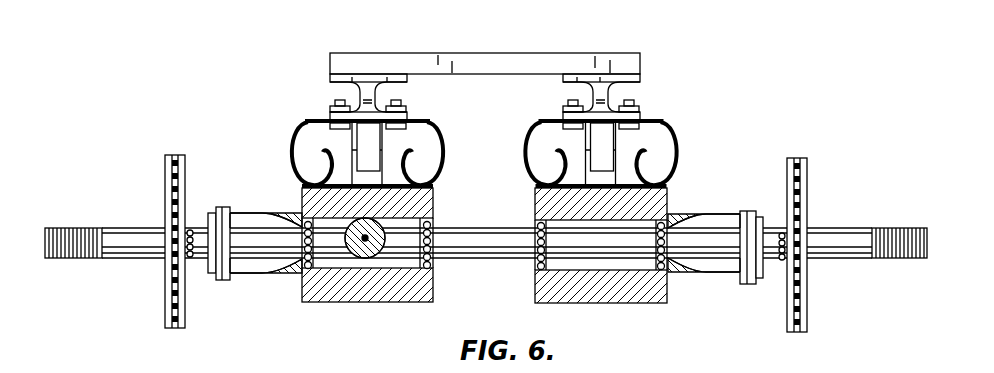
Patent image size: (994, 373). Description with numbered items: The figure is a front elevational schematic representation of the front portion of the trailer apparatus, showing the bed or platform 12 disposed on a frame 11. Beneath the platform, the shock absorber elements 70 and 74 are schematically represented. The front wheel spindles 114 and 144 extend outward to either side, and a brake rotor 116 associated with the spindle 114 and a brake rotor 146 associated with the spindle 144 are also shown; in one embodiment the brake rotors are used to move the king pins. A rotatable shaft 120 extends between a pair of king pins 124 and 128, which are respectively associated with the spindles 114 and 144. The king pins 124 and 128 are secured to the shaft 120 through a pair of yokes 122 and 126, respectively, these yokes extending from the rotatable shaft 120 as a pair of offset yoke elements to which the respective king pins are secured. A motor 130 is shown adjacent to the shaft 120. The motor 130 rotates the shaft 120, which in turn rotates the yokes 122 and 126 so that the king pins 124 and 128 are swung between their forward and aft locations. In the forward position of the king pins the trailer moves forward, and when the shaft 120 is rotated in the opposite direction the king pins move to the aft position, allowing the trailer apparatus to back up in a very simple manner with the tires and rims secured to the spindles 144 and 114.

The bed or platform 12 is at (493, 53).
The frame 11 is at (609, 95).
The shock absorber element 74 is at (303, 121).
The shock absorber element 70 is at (677, 145).
The brake rotor 146 is at (164, 178).
The front wheel spindle 144 is at (128, 228).
The king pin 128 is at (222, 207).
The yoke 126 is at (250, 274).
The motor 130 is at (372, 252).
The rotatable shaft 120 is at (468, 262).
The king pin 124 is at (748, 211).
The yoke 122 is at (706, 272).
The brake rotor 116 is at (808, 164).
The front wheel spindle 114 is at (832, 232).